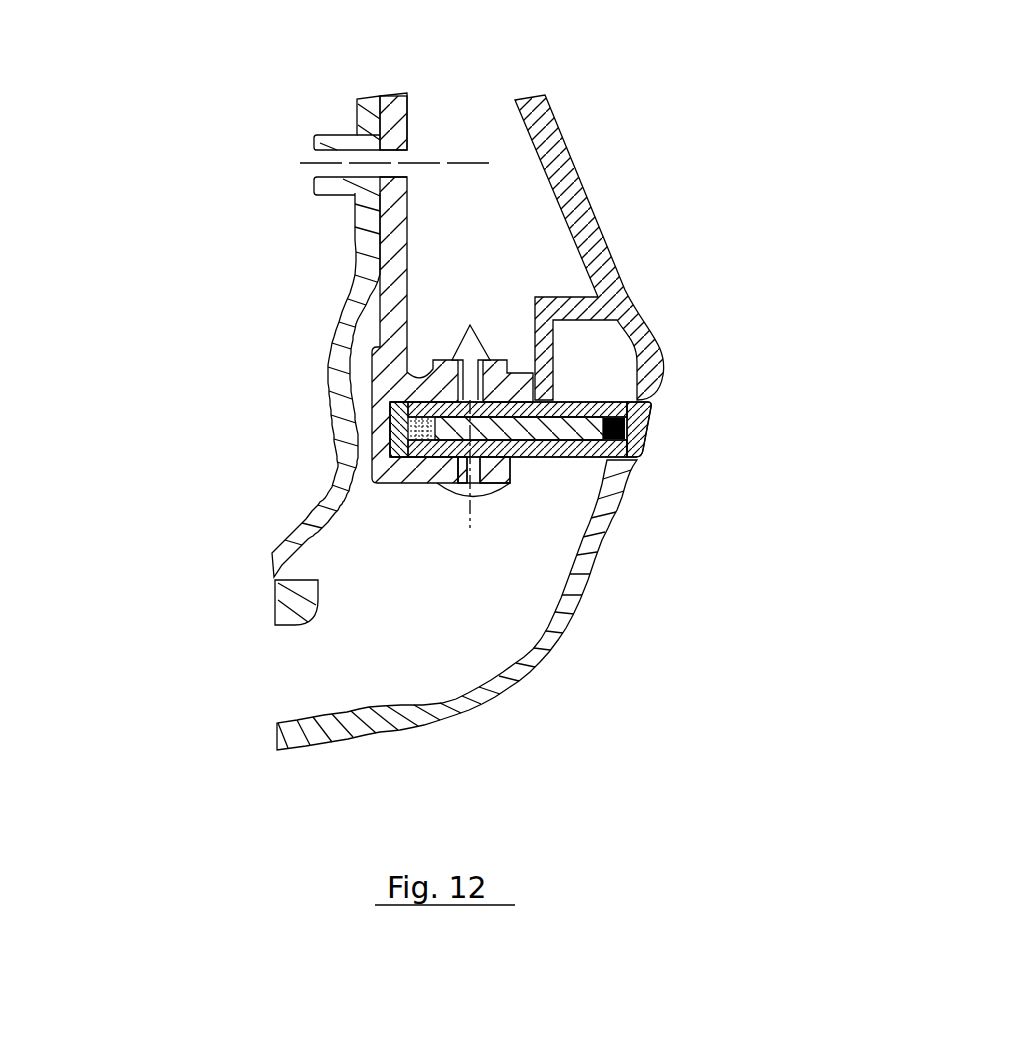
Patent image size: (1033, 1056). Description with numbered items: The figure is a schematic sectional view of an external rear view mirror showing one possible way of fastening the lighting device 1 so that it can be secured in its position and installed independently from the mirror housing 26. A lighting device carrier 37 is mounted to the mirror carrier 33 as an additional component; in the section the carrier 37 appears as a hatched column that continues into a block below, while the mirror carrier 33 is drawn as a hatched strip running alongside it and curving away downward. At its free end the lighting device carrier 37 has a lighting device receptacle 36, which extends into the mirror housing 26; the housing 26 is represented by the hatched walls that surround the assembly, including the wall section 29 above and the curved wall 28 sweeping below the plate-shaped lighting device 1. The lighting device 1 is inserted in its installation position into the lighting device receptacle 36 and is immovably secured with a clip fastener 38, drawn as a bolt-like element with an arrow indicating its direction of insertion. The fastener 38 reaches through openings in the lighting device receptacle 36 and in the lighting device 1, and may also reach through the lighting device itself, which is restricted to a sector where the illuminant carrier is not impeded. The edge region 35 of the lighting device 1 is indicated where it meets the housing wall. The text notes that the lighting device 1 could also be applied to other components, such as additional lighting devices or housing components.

The lighting device 1 is at (652, 432).
The mirror housing 26 is at (630, 266).
The curved outer wall 28 is at (484, 680).
The upper wall section 29 is at (565, 172).
The mirror carrier 33 is at (345, 437).
The plate edge 35 is at (640, 458).
The lighting device receptacle 36 is at (425, 490).
The lighting device carrier 37 is at (395, 342).
The clip fastener 38 is at (463, 350).